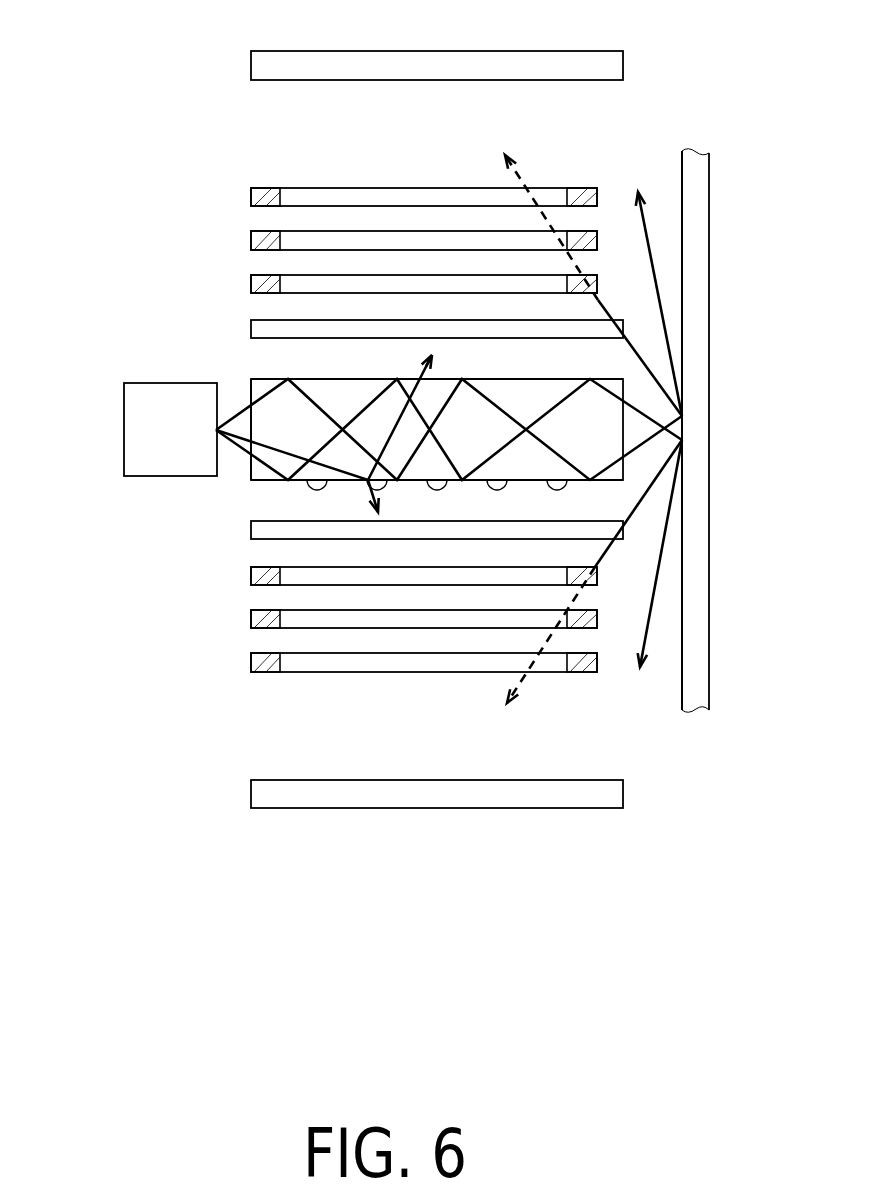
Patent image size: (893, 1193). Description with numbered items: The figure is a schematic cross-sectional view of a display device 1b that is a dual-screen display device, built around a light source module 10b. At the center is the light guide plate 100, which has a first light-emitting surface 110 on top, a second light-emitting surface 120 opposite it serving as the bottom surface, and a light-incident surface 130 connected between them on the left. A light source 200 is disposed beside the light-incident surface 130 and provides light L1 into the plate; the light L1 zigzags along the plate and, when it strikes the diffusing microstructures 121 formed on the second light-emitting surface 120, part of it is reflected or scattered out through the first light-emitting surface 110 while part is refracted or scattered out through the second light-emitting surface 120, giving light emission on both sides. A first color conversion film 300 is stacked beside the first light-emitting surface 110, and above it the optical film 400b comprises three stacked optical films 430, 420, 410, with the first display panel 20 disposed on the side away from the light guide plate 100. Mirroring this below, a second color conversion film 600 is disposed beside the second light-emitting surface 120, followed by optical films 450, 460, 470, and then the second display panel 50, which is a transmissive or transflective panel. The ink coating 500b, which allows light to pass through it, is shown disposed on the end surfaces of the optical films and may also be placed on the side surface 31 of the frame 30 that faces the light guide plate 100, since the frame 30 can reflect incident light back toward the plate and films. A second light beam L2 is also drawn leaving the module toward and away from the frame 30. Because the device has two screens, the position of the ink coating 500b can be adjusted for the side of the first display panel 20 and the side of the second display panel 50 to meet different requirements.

The display device 1b is at (67, 57).
The light source module 10b is at (198, 285).
The first display panel 20 is at (446, 68).
The frame 30 is at (735, 431).
The side surface 31 is at (684, 296).
The second display panel 50 is at (437, 798).
The light guide plate 100 is at (390, 438).
The first light-emitting surface 110 is at (265, 378).
The second light-emitting surface 120 is at (263, 481).
The diffusing microstructures 121 is at (318, 490).
The light-incident surface 130 is at (250, 464).
The light source 200 is at (138, 433).
The first color conversion film 300 is at (251, 331).
The optical film 400b is at (373, 432).
The optical film 410 is at (425, 285).
The optical film 420 is at (372, 242).
The optical film 430 is at (323, 198).
The optical film 450 is at (423, 575).
The optical film 460 is at (373, 618).
The optical film 470 is at (323, 660).
The ink coating 500b is at (251, 200).
The second color conversion film 600 is at (251, 528).
The light L1 is at (652, 248).
The second light beam L2 is at (530, 173).